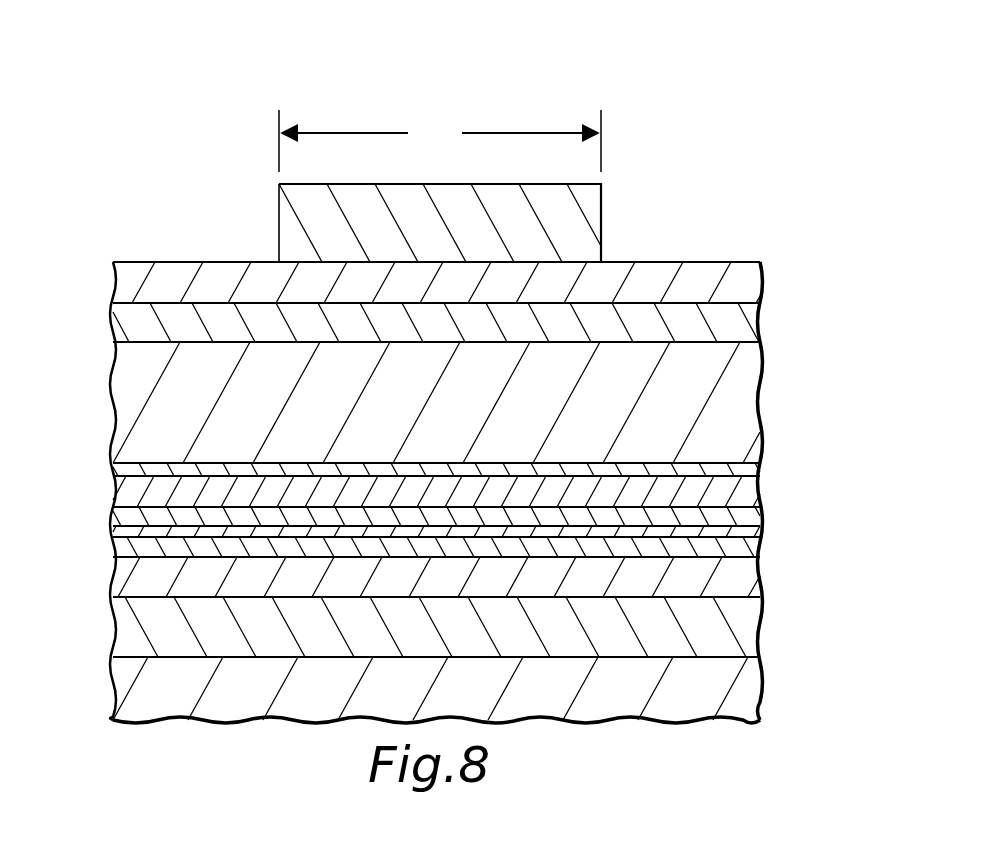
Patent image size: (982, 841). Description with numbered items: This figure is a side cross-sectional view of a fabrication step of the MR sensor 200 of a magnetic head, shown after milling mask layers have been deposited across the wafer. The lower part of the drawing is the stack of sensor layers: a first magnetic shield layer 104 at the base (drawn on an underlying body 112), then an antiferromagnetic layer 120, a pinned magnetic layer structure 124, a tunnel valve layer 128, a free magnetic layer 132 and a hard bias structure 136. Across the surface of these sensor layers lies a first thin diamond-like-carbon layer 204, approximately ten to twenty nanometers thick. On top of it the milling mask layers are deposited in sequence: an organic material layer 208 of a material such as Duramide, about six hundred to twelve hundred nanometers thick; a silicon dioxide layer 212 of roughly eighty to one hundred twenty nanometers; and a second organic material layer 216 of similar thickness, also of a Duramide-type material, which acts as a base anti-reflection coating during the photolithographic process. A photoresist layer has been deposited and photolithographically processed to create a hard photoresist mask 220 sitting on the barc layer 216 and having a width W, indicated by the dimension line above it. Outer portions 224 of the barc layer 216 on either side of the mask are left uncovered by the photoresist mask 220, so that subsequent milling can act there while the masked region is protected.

The MR sensor 200 is at (233, 193).
The outer portions of the barc layer 224 is at (165, 251).
The hard photoresist mask 220 is at (570, 236).
The second organic material layer 216 is at (738, 283).
The silicon dioxide layer 212 is at (738, 319).
The organic material layer 208 is at (735, 410).
The first diamond-like-carbon layer 204 is at (742, 470).
The hard bias structure 136 is at (738, 494).
The free magnetic layer 132 is at (122, 518).
The tunnel valve layer 128 is at (738, 530).
The pinned magnetic layer structure 124 is at (122, 549).
The antiferromagnetic layer 120 is at (742, 580).
The first magnetic shield layer 104 is at (745, 627).
The substrate 112 is at (742, 685).
The width of the hard photoresist mask W is at (440, 141).